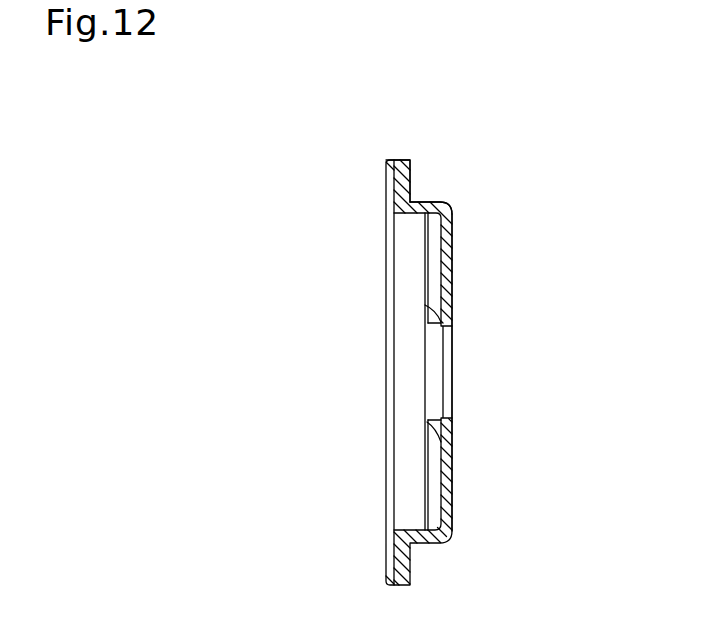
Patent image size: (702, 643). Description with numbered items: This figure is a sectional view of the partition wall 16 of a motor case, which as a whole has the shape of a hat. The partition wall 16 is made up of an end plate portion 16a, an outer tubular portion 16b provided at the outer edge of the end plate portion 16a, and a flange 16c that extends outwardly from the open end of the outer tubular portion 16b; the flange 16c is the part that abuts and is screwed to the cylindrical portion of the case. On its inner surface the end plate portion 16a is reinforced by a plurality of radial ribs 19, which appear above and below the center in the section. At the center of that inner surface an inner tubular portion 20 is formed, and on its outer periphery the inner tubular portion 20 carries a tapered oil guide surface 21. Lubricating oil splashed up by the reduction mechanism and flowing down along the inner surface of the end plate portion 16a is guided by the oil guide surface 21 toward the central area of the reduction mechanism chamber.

The partition wall 16 is at (457, 210).
The end plate portion 16a is at (450, 272).
The outer tubular portion 16b is at (427, 203).
The flange 16c is at (399, 162).
The radial ribs 19 is at (432, 260).
The inner tubular portion 20 is at (428, 323).
The oil guide surface 21 is at (432, 321).